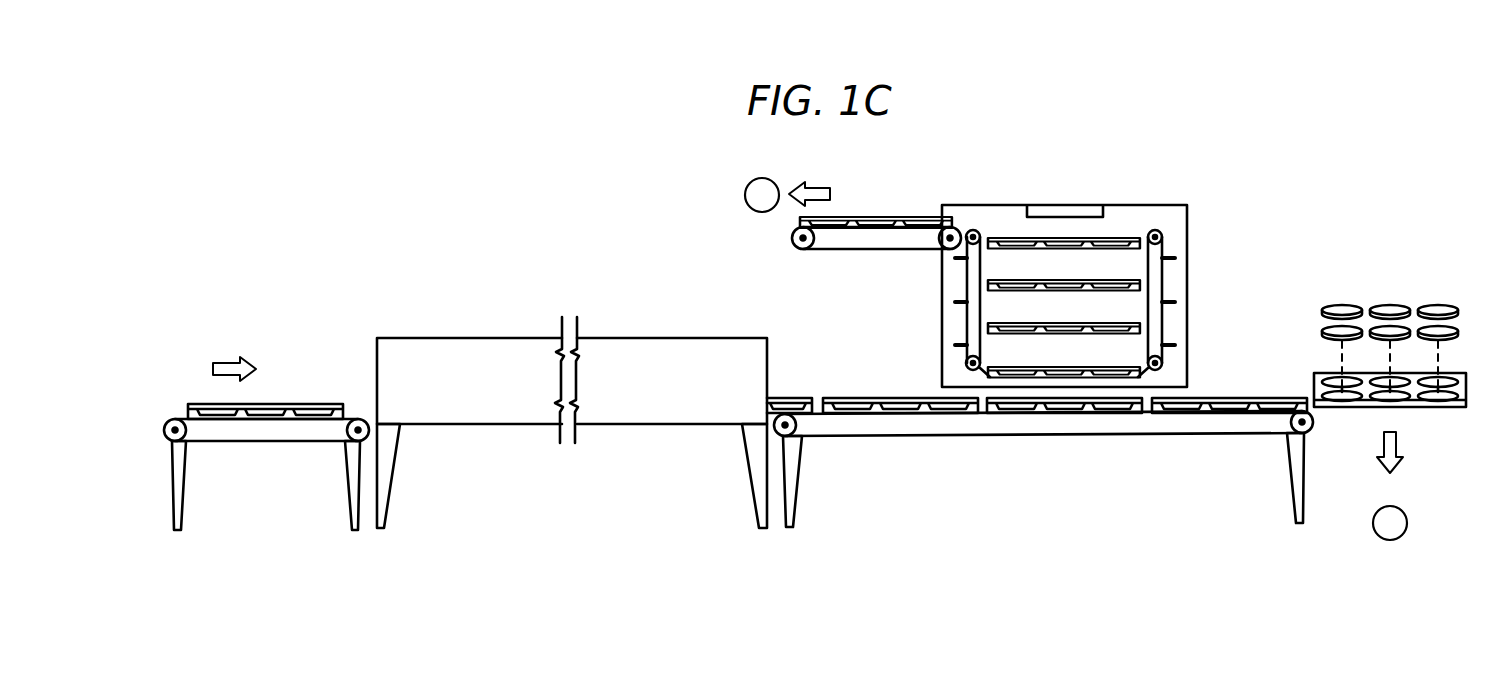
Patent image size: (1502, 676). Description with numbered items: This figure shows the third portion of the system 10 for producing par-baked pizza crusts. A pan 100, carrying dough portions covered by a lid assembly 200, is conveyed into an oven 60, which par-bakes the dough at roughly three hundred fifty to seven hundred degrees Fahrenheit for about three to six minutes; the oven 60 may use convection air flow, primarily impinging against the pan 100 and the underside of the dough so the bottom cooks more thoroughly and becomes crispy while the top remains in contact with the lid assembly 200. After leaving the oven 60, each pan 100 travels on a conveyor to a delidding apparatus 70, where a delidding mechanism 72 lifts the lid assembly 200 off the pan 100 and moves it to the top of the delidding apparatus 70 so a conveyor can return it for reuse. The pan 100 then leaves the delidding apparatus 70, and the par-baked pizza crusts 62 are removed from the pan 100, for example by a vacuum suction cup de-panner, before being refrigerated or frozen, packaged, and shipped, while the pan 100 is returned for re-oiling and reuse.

The system 10 is at (678, 180).
The oven 60 is at (490, 338).
The delidding apparatus 70 is at (1165, 205).
The delidding mechanism 72 is at (1157, 318).
The lid assembly 200 is at (890, 217).
The par-baked pizza crusts 62 is at (1343, 305).
The pan 100 is at (1450, 408).